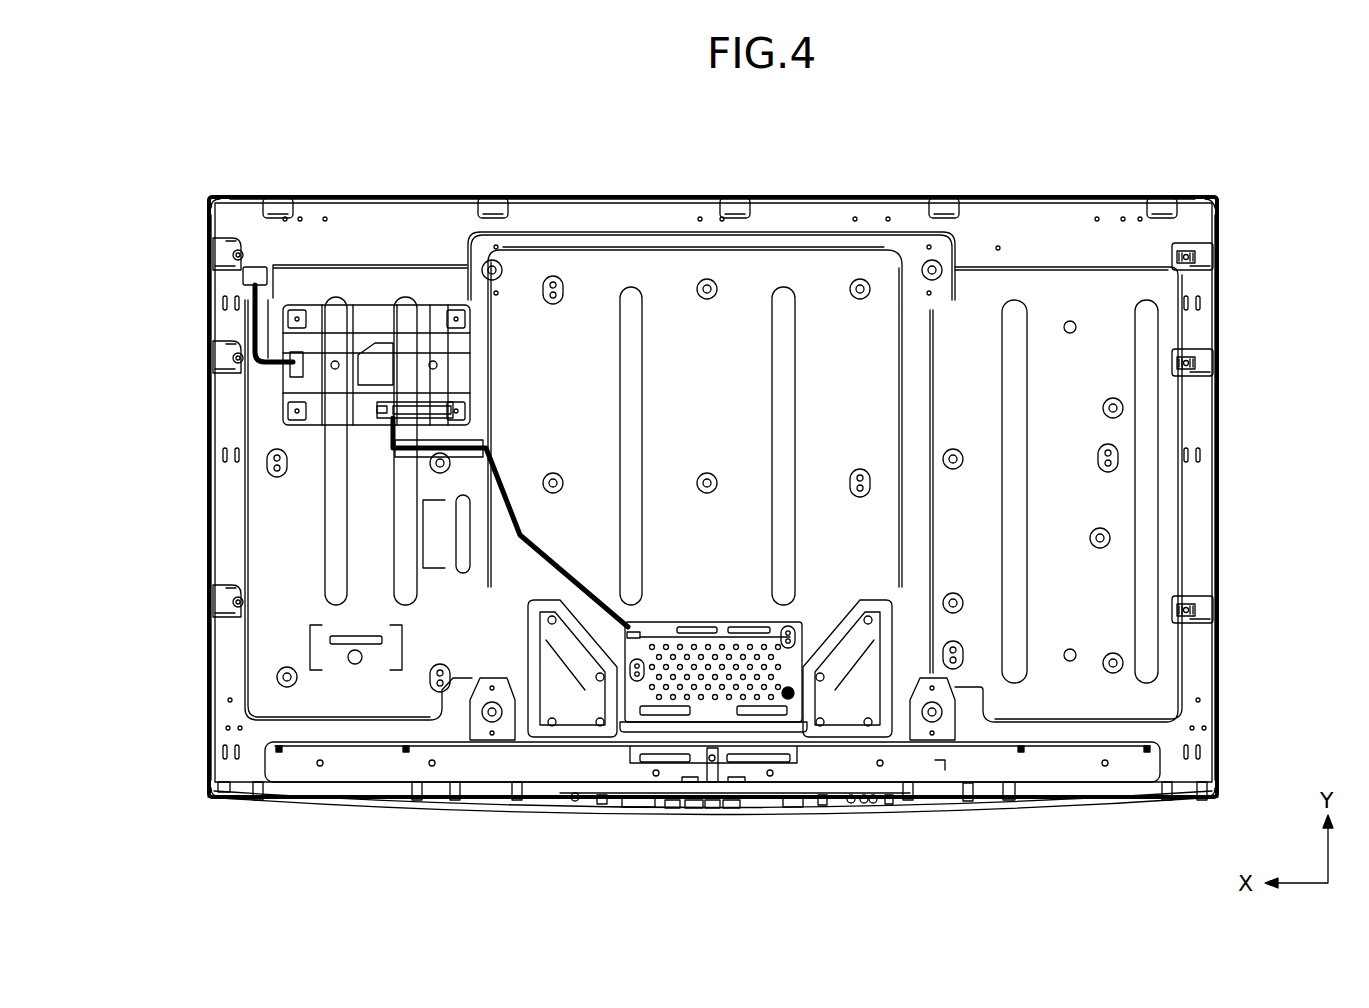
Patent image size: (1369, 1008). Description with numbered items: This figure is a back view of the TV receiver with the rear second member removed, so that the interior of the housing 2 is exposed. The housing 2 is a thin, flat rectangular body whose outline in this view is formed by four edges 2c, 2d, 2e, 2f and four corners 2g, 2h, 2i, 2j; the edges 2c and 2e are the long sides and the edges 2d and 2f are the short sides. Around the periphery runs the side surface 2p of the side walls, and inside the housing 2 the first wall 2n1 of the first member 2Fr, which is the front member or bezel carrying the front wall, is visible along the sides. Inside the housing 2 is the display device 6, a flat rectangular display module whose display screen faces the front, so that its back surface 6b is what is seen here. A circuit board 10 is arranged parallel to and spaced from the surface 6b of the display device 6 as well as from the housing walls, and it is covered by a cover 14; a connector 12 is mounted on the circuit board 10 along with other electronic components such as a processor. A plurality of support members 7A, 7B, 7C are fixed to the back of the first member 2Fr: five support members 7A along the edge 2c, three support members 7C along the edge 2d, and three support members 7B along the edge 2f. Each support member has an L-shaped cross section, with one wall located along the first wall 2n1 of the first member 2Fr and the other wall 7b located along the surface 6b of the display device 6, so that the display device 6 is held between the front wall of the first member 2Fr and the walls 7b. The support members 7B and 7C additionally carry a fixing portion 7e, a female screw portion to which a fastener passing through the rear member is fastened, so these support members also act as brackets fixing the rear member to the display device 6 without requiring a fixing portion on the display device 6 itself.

The housing 2 is at (398, 189).
The edge 2c is at (712, 171).
The edge 2d is at (211, 468).
The edge 2e is at (958, 812).
The edge 2f is at (1215, 468).
The side surface 2p is at (712, 171).
The first wall 2n1 is at (580, 197).
The corner 2g is at (1214, 198).
The corner 2h is at (212, 198).
The corner 2i is at (208, 798).
The corner 2j is at (1218, 798).
The first member 2Fr is at (200, 712).
The display device 6 is at (840, 220).
The surface 6b is at (1022, 228).
The support member 7A is at (281, 190).
The support member 7B is at (1222, 258).
The support member 7C is at (204, 256).
The wall 7b is at (275, 203).
The fixing portion 7e is at (230, 237).
The circuit board 10 is at (398, 405).
The connector 12 is at (253, 268).
The cover 14 is at (420, 318).